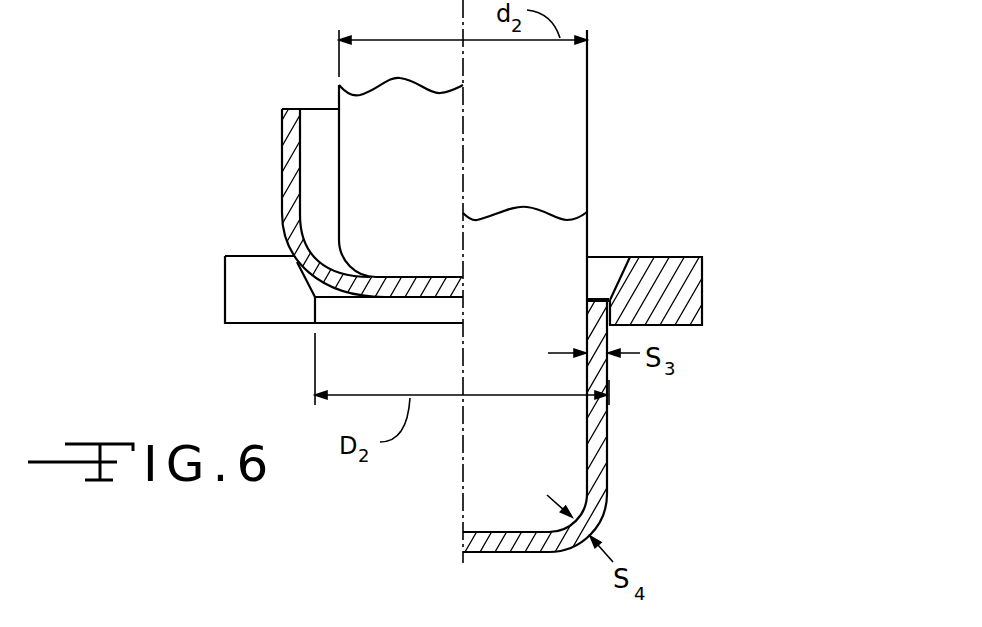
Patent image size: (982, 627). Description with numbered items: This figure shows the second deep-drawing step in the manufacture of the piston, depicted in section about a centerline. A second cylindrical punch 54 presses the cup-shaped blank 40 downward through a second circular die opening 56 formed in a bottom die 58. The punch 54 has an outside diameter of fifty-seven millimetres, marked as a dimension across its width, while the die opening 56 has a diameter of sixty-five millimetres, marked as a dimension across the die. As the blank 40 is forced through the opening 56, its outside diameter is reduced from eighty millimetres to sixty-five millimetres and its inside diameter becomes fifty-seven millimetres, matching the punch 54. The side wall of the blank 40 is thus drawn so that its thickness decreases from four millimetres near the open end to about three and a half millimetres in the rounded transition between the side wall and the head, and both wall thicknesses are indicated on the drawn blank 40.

The blank 40 is at (608, 410).
The second cylindrical punch 54 is at (516, 228).
The second circular die opening 56 is at (352, 337).
The bottom die 58 is at (702, 278).